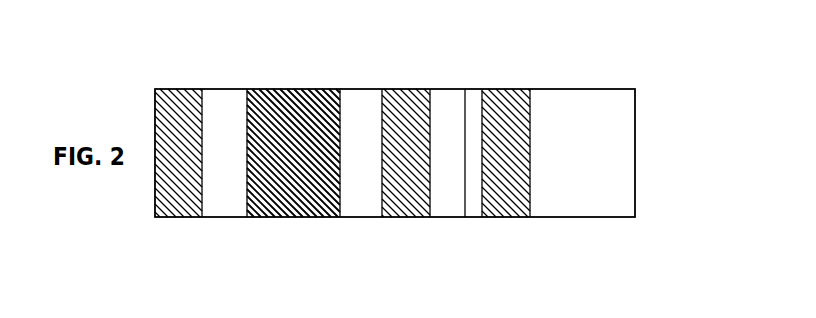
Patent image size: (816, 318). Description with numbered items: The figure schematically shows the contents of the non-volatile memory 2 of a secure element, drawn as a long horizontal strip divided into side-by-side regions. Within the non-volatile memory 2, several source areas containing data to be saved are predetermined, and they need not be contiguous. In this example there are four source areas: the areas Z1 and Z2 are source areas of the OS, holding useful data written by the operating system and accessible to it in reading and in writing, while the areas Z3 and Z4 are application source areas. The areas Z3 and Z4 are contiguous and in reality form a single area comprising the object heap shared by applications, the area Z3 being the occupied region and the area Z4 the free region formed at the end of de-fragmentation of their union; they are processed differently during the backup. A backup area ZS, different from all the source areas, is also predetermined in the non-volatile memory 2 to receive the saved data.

The non-volatile memory 2 is at (635, 155).
The source area of the OS Z1 is at (222, 200).
The source area of the OS Z2 is at (363, 207).
The application source area Z3 is at (438, 207).
The application source area Z4 is at (472, 102).
The backup area ZS is at (562, 207).